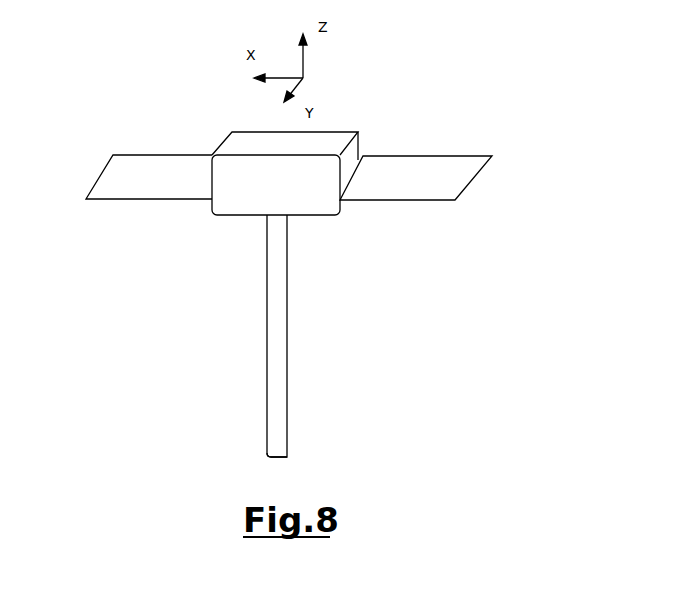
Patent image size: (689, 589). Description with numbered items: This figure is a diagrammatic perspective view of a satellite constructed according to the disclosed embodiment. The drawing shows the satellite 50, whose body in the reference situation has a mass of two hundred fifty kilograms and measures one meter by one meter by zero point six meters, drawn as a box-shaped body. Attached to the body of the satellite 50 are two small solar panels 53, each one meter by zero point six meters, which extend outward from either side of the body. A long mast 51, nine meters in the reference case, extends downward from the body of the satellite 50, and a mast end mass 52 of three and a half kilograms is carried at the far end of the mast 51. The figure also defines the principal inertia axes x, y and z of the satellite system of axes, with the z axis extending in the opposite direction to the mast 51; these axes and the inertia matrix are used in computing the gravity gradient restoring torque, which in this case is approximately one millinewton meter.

The satellite 50 is at (303, 200).
The mast 51 is at (287, 343).
The mast end mass 52 is at (278, 457).
The solar panels 53 is at (130, 191).